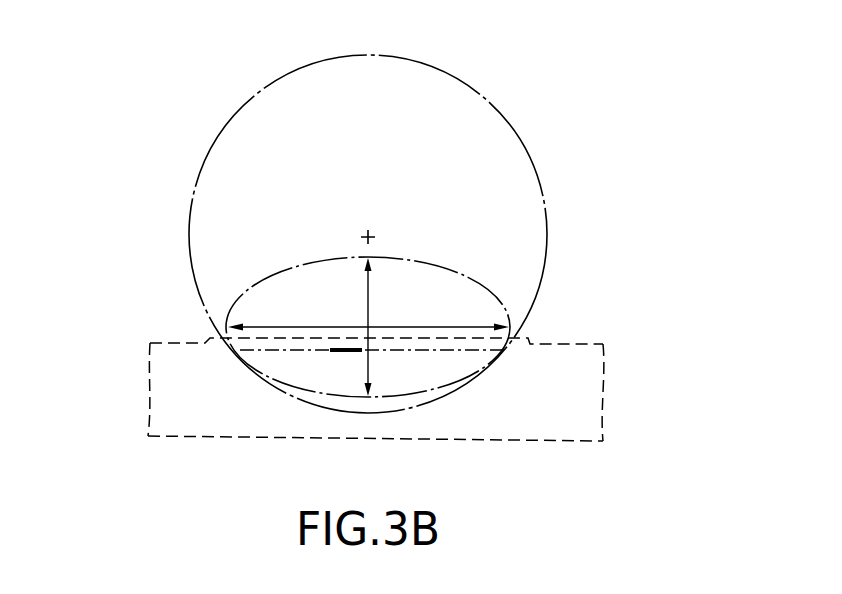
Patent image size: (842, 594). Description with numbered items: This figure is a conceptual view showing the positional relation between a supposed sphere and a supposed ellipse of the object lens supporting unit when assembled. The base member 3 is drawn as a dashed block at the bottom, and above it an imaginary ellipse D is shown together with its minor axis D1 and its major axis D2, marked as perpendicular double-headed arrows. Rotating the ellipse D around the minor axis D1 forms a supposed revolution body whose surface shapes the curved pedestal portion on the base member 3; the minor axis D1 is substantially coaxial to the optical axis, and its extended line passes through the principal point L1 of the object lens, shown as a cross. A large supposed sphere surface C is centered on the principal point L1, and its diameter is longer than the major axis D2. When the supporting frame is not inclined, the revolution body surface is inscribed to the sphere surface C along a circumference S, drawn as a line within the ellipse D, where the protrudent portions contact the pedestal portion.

The supposed sphere surface C is at (512, 125).
The ellipse D is at (272, 275).
The principal point L1 is at (363, 230).
The minor axis D1 is at (372, 305).
The major axis D2 is at (408, 325).
The base member 3 is at (175, 342).
The circumference S is at (305, 352).